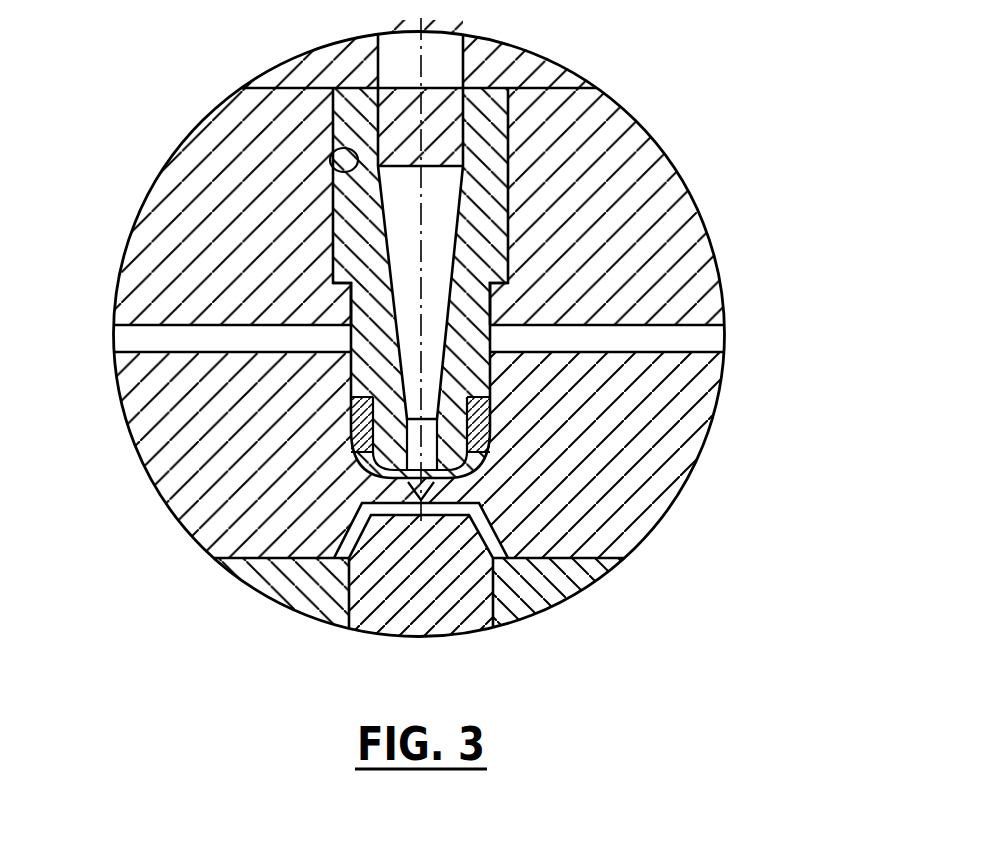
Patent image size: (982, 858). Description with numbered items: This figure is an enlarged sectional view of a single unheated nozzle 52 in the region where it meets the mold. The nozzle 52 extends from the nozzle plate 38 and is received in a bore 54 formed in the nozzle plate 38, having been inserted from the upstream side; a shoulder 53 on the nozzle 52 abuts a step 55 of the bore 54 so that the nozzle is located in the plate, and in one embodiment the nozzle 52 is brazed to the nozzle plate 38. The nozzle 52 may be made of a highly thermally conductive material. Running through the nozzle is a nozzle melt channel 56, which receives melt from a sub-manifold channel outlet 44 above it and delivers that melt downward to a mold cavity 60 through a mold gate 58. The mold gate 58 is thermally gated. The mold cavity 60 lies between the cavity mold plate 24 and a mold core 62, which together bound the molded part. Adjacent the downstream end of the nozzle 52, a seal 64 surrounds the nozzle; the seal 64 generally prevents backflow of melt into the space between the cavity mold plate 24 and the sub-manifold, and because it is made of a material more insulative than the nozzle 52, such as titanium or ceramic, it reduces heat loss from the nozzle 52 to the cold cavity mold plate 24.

The cavity mold plate 24 is at (687, 440).
The nozzle plate 38 is at (685, 204).
The sub-manifold channel outlet 44 is at (450, 65).
The nozzle 52 is at (341, 229).
The shoulder 53 is at (495, 270).
The bore 54 is at (334, 172).
The step 55 is at (545, 318).
The nozzle melt channel 56 is at (360, 302).
The mold gate 58 is at (413, 493).
The mold cavity 60 is at (490, 535).
The mold core 62 is at (470, 597).
The seal 64 is at (360, 417).